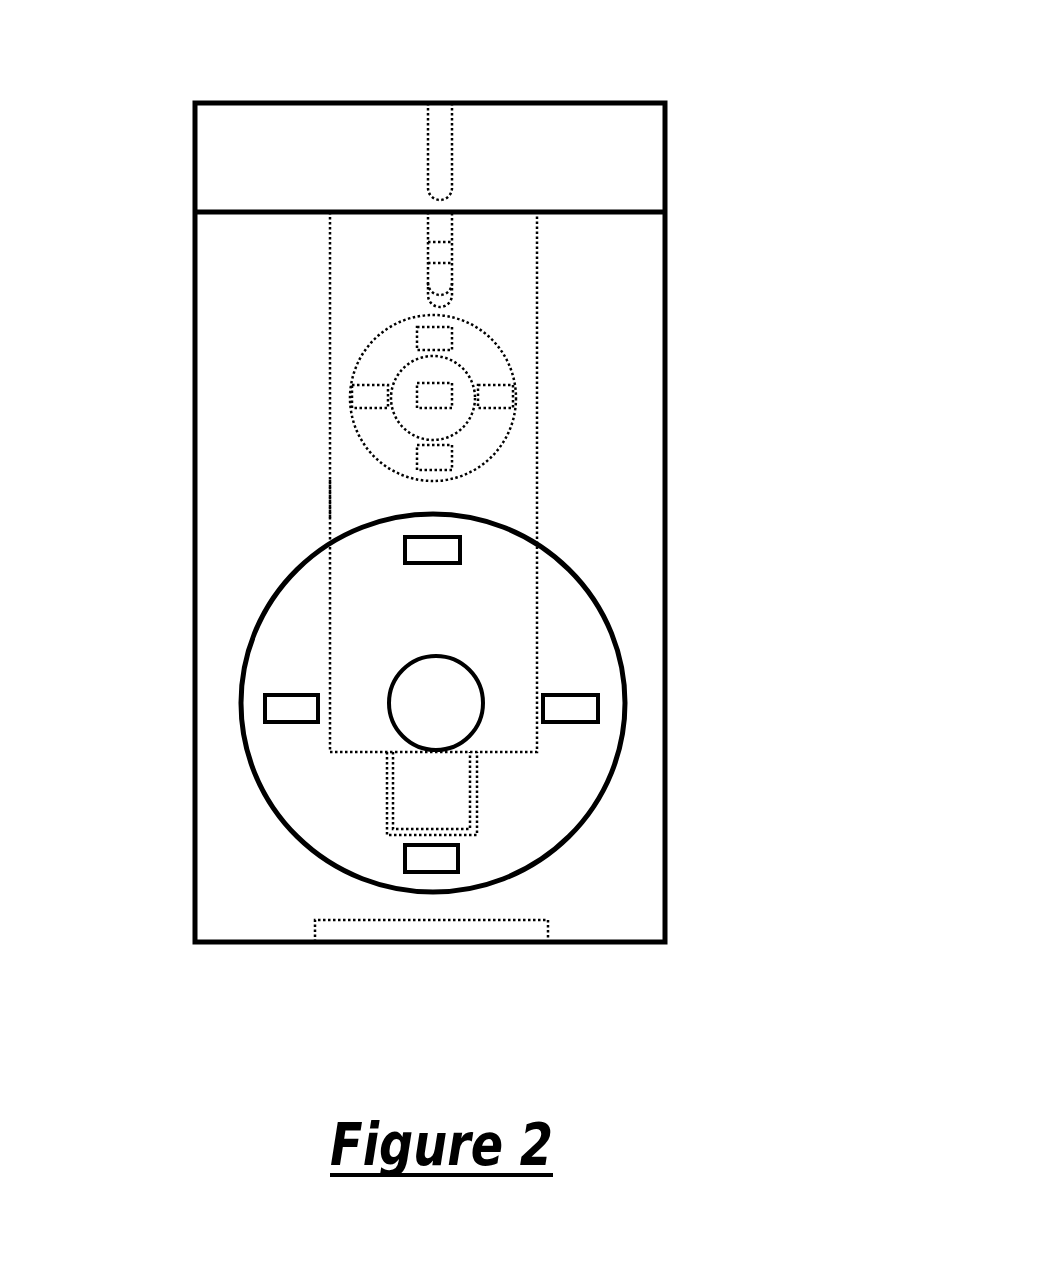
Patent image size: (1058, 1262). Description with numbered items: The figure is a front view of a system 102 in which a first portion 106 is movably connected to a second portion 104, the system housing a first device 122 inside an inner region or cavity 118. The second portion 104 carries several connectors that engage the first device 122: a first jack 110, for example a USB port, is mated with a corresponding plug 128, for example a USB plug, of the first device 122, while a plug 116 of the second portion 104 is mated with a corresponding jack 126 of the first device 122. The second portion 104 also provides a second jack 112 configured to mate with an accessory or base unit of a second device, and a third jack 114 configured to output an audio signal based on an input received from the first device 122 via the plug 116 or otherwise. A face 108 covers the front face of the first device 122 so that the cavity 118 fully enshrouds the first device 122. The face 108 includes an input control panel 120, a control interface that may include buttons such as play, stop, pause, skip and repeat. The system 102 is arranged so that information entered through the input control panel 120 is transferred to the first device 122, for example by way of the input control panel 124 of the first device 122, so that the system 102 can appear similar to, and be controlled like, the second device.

The system 102 is at (782, 120).
The second portion 104 is at (665, 442).
The first portion 106 is at (665, 143).
The face 108 is at (613, 553).
The first jack 110 is at (477, 768).
The second jack 112 is at (550, 928).
The third jack 114 is at (452, 128).
The plug 116 is at (435, 230).
The inner region or cavity 118 is at (330, 497).
The input control panel 120 is at (623, 667).
The first device 122 is at (358, 310).
The input control panel of the first device 124 is at (358, 365).
The jack of the first device 126 is at (428, 284).
The plug of the first device 128 is at (443, 792).